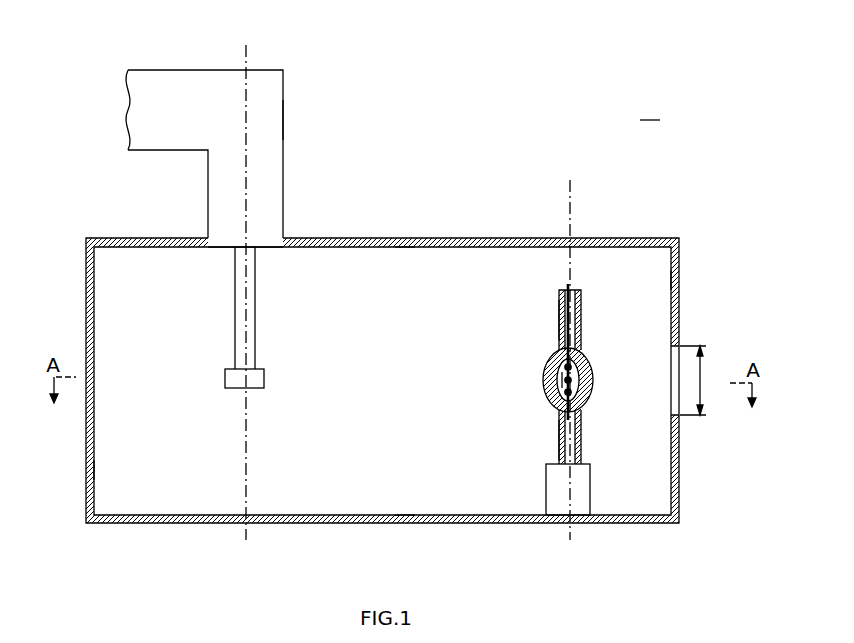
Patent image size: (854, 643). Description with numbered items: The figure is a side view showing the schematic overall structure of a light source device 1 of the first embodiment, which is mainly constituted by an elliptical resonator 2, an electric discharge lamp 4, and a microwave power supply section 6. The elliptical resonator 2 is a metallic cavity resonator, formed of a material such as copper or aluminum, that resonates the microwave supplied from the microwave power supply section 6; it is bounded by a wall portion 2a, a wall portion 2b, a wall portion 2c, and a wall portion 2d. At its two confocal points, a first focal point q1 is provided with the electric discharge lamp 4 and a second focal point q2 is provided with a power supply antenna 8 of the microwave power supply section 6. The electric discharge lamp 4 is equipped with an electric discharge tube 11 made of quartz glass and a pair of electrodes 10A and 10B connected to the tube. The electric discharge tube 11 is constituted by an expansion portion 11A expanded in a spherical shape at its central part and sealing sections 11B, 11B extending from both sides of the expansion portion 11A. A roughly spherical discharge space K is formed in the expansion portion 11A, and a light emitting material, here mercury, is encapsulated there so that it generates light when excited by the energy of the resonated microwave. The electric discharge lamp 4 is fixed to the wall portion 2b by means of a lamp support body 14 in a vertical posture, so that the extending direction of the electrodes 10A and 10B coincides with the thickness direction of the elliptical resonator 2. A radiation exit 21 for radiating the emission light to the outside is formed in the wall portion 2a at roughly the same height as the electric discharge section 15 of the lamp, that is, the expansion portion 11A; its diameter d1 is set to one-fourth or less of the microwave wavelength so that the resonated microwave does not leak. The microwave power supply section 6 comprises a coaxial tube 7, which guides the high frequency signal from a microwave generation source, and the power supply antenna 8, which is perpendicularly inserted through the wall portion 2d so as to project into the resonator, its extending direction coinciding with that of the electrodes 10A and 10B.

The light source device 1 is at (657, 109).
The elliptical resonator 2 is at (651, 236).
The wall portion 2a is at (680, 278).
The wall portion 2b is at (405, 523).
The wall portion 2c is at (86, 468).
The wall portion 2d is at (405, 238).
The electric discharge lamp 4 is at (586, 288).
The microwave power supply section 6 is at (166, 62).
The coaxial tube 7 is at (283, 118).
The power supply antenna 8 is at (224, 375).
The electrode 10A is at (585, 398).
The electrode 10B is at (588, 360).
The electric discharge tube 11 is at (556, 297).
The expansion portion 11A is at (548, 352).
The sealing section 11B is at (559, 318).
The lamp support body 14 is at (588, 492).
The electric discharge section 15 is at (580, 378).
The radiation exit 21 is at (679, 415).
The diameter of the radiation exit d1 is at (702, 380).
The discharge space K is at (555, 385).
The first focal point q1 is at (569, 346).
The second focal point q2 is at (246, 280).